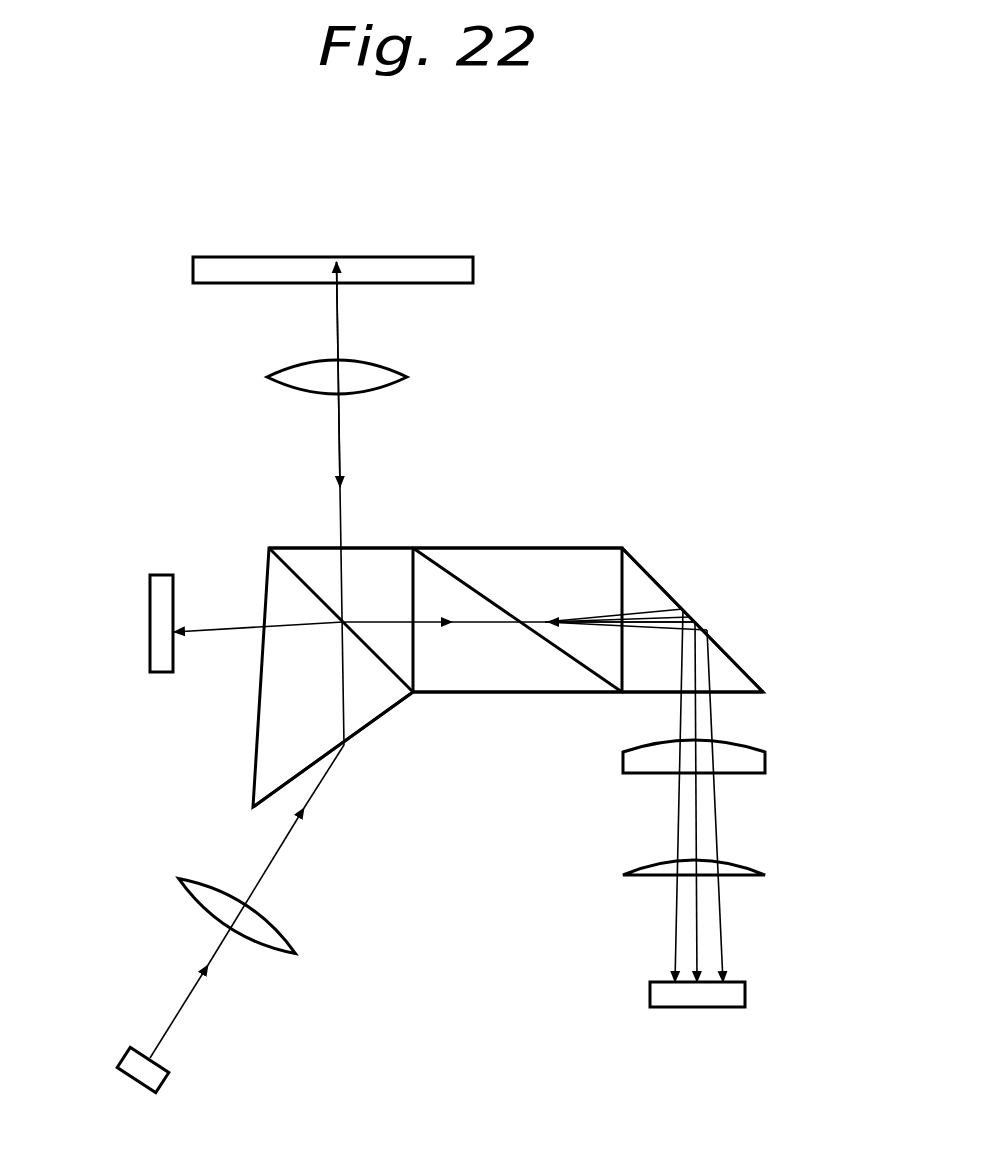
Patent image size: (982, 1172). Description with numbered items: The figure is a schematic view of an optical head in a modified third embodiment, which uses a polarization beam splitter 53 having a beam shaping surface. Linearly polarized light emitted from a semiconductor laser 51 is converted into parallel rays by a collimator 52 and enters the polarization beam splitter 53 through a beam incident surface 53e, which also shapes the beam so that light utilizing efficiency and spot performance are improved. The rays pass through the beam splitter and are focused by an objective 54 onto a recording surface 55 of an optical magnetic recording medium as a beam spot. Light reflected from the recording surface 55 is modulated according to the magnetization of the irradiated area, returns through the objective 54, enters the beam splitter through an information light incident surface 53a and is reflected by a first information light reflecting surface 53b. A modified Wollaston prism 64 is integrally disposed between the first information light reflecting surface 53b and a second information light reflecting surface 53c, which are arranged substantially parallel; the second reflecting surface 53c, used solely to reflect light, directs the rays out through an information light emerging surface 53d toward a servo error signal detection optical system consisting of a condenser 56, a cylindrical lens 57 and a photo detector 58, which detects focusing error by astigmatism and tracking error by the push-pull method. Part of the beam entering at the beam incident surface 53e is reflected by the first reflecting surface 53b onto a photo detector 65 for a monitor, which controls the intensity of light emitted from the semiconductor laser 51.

The semiconductor laser 51 is at (130, 1062).
The collimator 52 is at (200, 885).
The polarization beam splitter 53 is at (500, 650).
The information light incident surface 53a is at (378, 548).
The first information light reflecting surface 53b is at (296, 568).
The second information light reflecting surface 53c is at (641, 571).
The information light emerging surface 53d is at (735, 688).
The beam incident surface 53e is at (375, 726).
The objective 54 is at (283, 373).
The recording surface 55 is at (297, 256).
The condenser 56 is at (757, 758).
The cylindrical lens 57 is at (742, 866).
The photo detector 58 is at (735, 997).
The modified Wollaston prism 64 is at (513, 546).
The photo detector for a monitor 65 is at (160, 580).